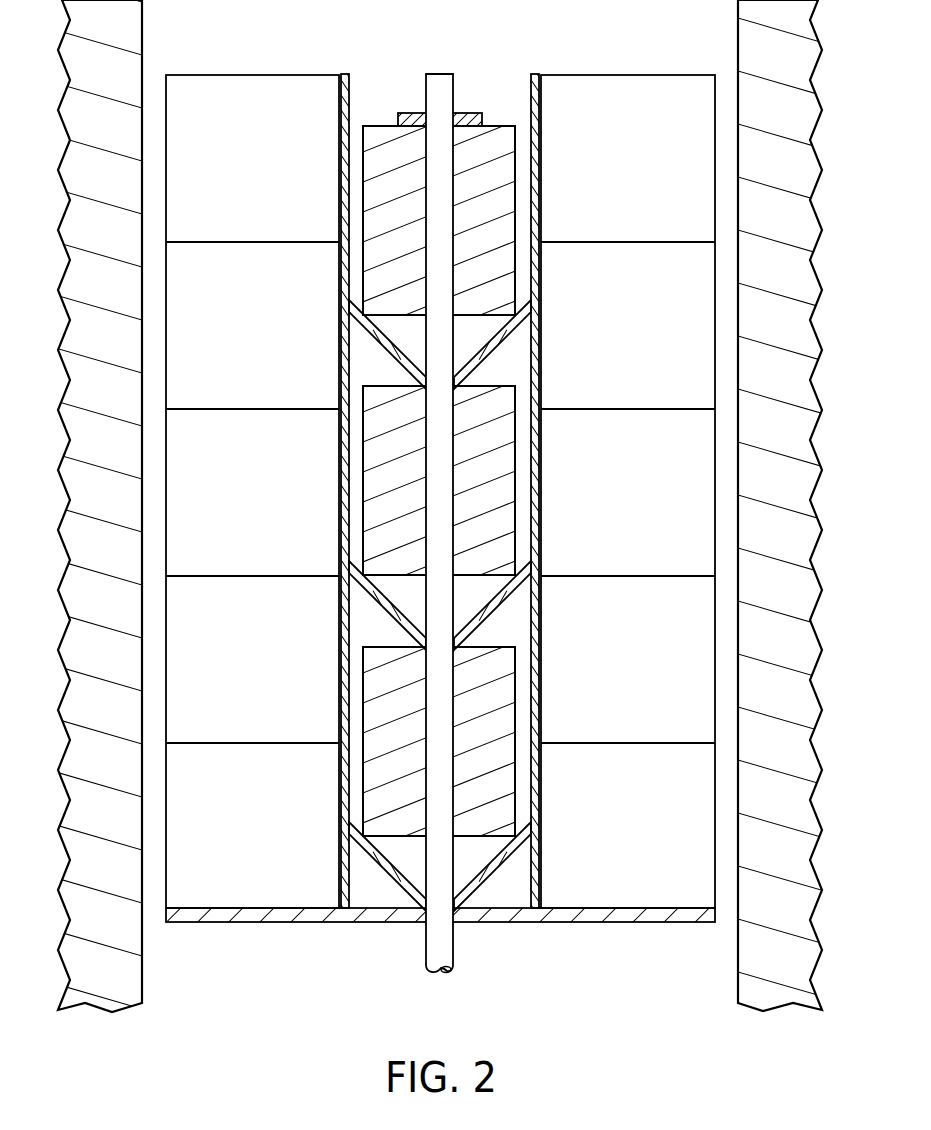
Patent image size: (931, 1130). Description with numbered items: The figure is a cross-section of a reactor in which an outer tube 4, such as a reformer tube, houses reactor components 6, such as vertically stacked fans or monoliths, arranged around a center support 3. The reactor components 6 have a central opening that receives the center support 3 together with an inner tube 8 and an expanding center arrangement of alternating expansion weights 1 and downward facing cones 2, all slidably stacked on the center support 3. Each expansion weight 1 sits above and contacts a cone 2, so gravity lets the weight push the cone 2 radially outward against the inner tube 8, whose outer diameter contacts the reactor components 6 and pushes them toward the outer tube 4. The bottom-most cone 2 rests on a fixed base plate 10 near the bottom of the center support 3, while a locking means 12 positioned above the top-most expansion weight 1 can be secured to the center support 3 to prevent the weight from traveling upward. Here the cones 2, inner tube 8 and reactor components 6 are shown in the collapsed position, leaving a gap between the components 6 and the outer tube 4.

The expansion weight 1 is at (405, 217).
The cone 2 is at (498, 342).
The center support 3 is at (427, 90).
The outer tube 4 is at (143, 42).
The reactor components 6 is at (263, 505).
The inner tube 8 is at (536, 113).
The base plate 10 is at (619, 915).
The locking means 12 is at (470, 113).